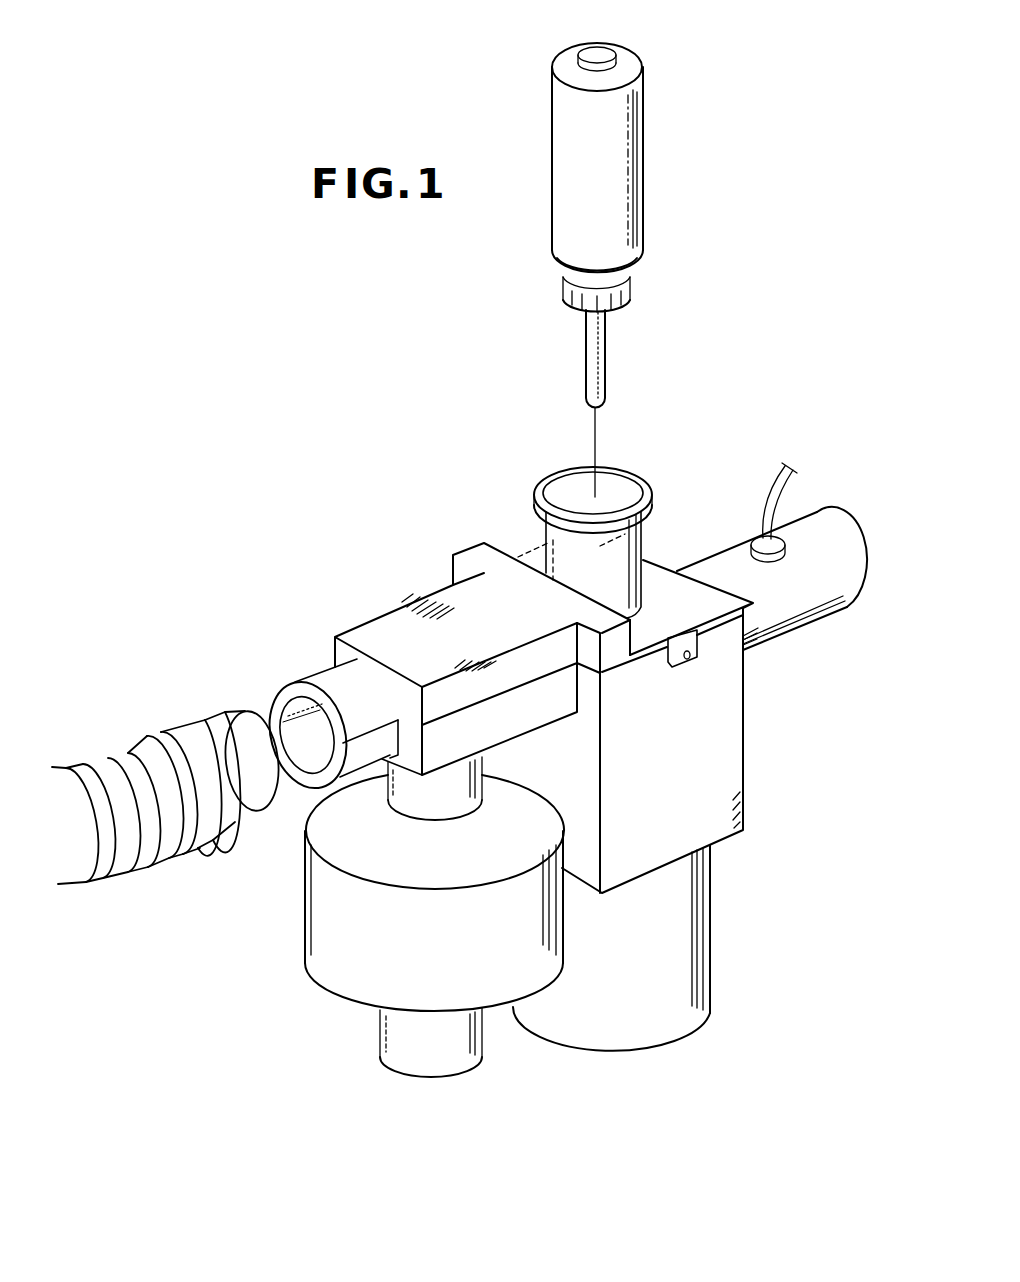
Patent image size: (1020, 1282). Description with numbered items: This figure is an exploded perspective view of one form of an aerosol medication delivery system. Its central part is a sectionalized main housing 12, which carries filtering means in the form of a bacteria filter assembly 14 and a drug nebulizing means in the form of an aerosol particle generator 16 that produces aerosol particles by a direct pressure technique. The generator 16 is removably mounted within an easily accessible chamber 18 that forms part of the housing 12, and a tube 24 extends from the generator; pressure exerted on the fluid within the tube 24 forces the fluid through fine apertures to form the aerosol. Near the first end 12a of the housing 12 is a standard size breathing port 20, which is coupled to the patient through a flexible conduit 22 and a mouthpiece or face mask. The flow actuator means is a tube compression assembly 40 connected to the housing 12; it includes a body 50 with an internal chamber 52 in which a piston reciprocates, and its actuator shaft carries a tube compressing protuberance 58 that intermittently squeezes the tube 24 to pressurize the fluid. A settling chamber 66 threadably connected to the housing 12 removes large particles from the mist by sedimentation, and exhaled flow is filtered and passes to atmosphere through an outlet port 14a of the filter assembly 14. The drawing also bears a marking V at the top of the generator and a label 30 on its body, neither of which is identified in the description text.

The valve V is at (598, 58).
The aerosol particle generator 16 is at (645, 151).
The container body 30 is at (572, 223).
The tube 24 is at (604, 337).
The chamber 18 is at (624, 492).
The main housing 12 is at (378, 582).
The first end 12a is at (325, 668).
The breathing port 20 is at (313, 745).
The flexible conduit 22 is at (90, 766).
The bacteria filter assembly 14 is at (303, 942).
The outlet port 14a is at (428, 1077).
The settling chamber 66 is at (703, 936).
The compression assembly 40 is at (842, 563).
The body 50 is at (730, 567).
The chamber 52 is at (761, 613).
The tube compressing protuberance 58 is at (786, 482).